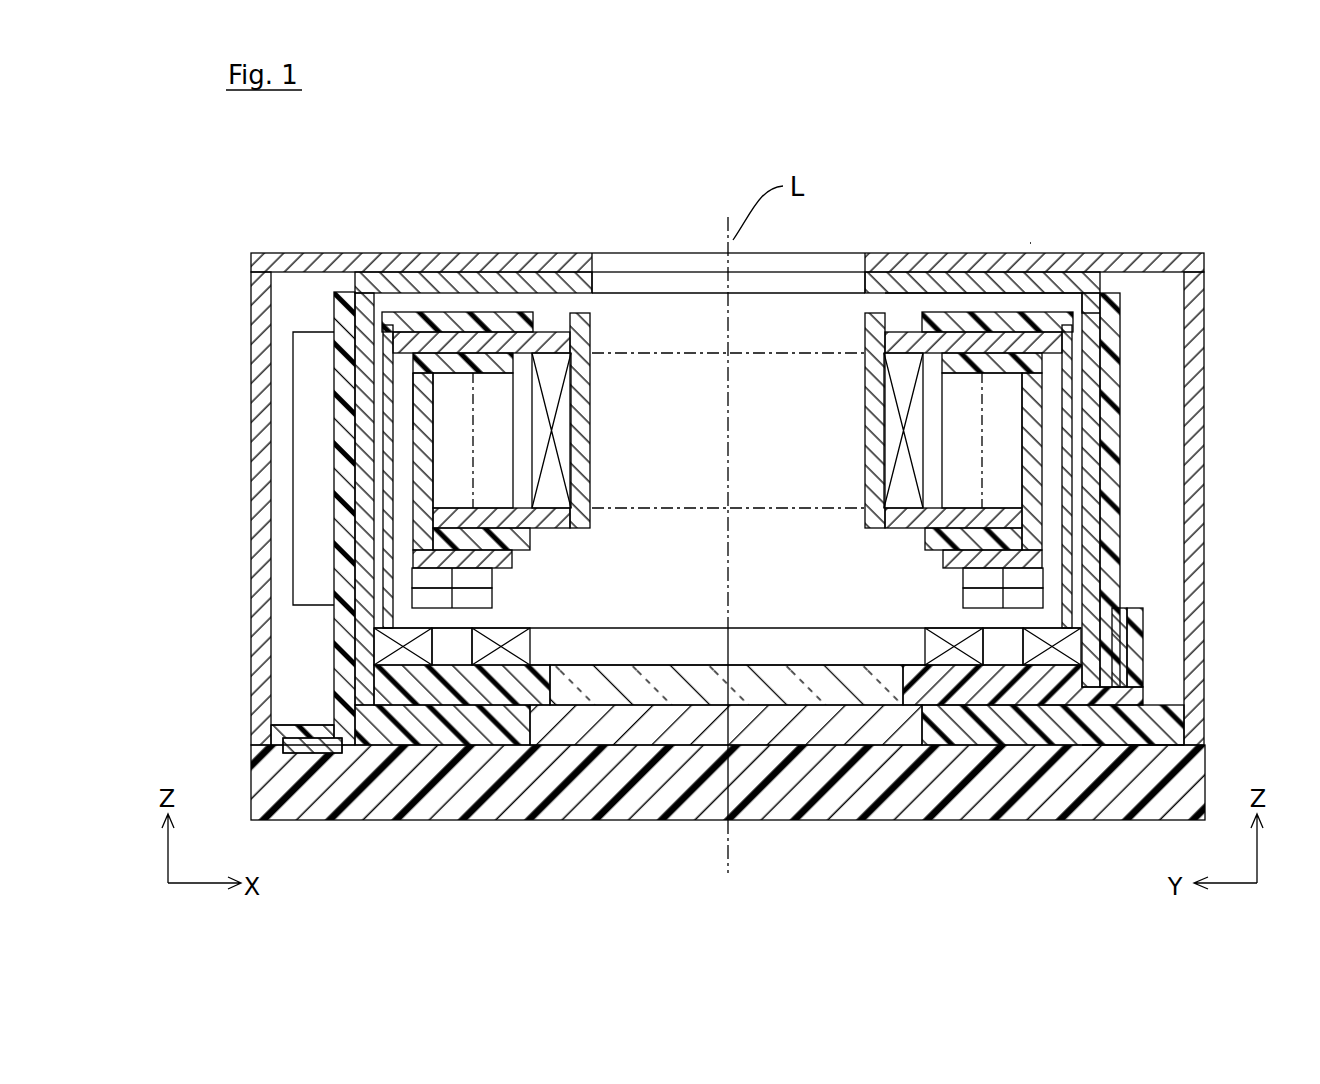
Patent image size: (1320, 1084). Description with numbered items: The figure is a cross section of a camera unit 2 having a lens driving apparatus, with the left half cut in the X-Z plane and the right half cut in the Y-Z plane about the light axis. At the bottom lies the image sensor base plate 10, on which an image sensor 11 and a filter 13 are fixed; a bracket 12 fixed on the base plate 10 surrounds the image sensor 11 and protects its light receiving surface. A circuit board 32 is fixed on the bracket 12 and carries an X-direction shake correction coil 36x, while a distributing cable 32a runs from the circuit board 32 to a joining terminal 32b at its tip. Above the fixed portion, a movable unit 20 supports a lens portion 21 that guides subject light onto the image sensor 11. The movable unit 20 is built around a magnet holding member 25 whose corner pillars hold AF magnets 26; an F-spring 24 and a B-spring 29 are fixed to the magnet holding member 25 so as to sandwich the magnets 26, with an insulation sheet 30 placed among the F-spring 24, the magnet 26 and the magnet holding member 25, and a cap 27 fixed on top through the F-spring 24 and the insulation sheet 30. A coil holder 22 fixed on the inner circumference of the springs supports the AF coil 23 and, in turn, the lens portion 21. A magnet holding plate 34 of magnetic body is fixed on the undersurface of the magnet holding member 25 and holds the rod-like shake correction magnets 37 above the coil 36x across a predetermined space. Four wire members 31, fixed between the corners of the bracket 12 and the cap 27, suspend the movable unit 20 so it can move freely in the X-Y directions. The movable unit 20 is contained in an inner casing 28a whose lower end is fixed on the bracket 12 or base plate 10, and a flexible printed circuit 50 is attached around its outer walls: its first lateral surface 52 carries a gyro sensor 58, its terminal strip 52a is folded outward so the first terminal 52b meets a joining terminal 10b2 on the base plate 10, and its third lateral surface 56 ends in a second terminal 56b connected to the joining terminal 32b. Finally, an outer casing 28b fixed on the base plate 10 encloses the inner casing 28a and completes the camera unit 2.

The camera unit 2 is at (1039, 236).
The image sensor base plate 10 is at (917, 793).
The joining terminal 10b2 is at (305, 755).
The image sensor 11 is at (662, 745).
The bracket 12 is at (470, 745).
The filter 13 is at (815, 705).
The movable unit 20 is at (904, 311).
The lens portion 21 is at (665, 355).
The coil holder 22 is at (580, 320).
The AF coil 23 is at (548, 353).
The F-spring 24 is at (472, 333).
The magnet holding member 25 is at (410, 430).
The AF magnet 26 is at (485, 467).
The cap 27 is at (505, 340).
The inner casing 28a is at (365, 633).
The outer casing 28b is at (345, 606).
The B-spring 29 is at (560, 528).
The insulation sheet 30 is at (440, 320).
The wire member 31 is at (377, 368).
The circuit board 32 is at (445, 735).
The distributing cable 32a is at (1140, 657).
The joining terminal 32b is at (1140, 627).
The magnet holding plate 34 is at (425, 550).
The X-direction shake correction coil 36x is at (550, 705).
The shake correction magnet 37 is at (1033, 600).
The flexible printed circuit 50 is at (326, 309).
The first lateral surface 52 is at (343, 685).
The terminal strip 52a is at (312, 732).
The first terminal 52b is at (310, 748).
The third lateral surface 56 is at (1113, 475).
The second terminal 56b is at (1100, 735).
The gyro sensor 58 is at (307, 478).